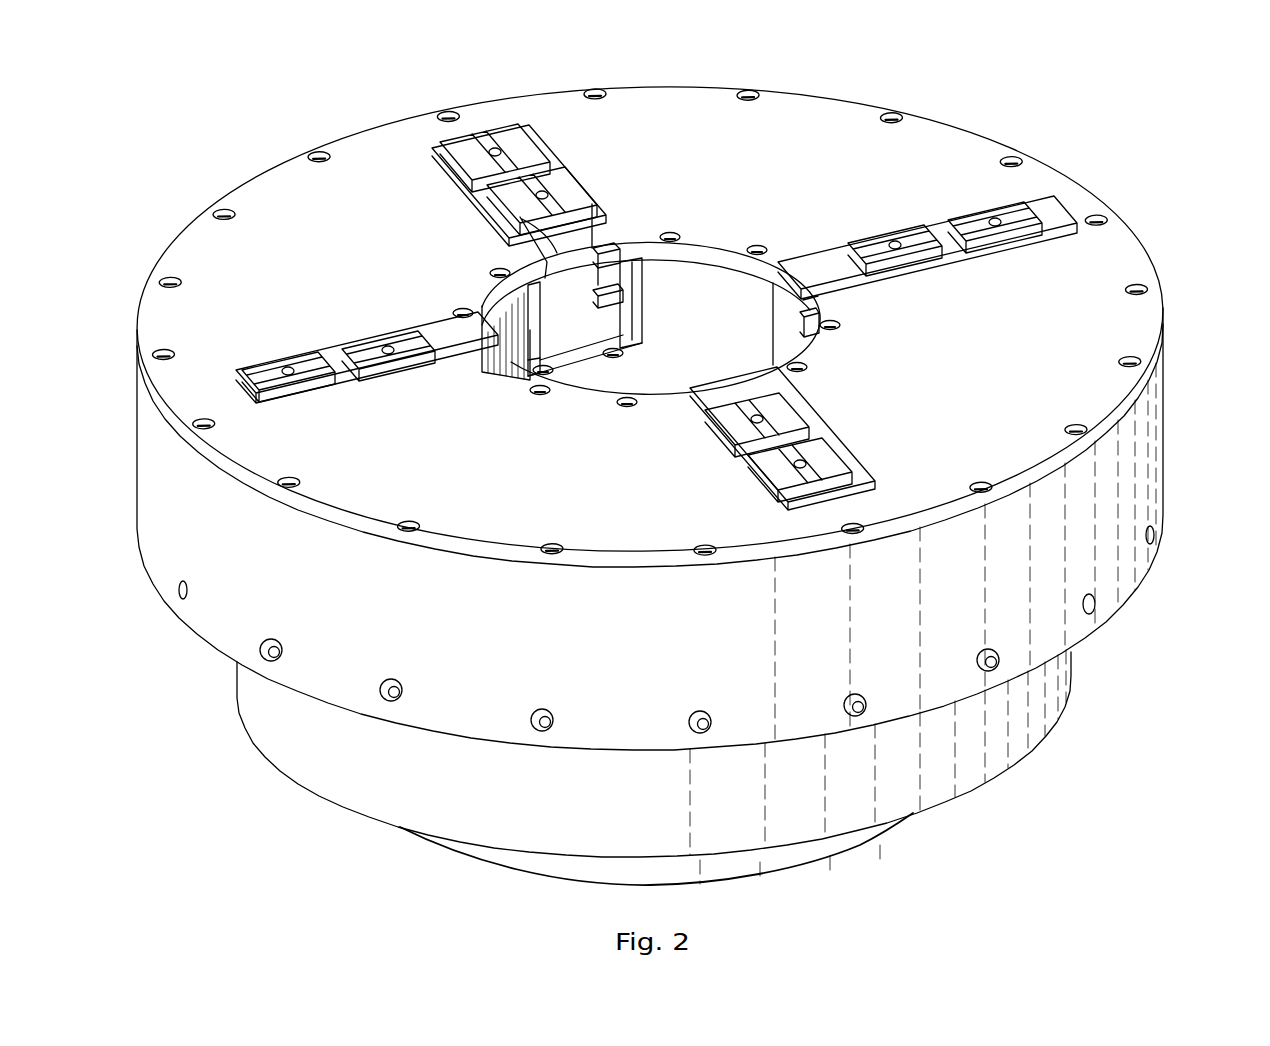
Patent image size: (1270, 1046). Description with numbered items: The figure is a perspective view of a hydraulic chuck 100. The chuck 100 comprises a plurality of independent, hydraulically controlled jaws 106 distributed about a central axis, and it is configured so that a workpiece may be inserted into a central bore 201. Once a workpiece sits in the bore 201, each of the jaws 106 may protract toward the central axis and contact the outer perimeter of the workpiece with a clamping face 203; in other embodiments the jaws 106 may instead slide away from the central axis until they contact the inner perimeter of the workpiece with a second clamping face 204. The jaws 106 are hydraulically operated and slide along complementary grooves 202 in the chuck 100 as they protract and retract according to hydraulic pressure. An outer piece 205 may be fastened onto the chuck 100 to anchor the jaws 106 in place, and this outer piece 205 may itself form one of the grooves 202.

The chuck 100 is at (222, 133).
The jaws 106 is at (560, 184).
The central bore 201 is at (720, 318).
The complementary grooves 202 is at (596, 285).
The clamping face 203 is at (515, 217).
The second clamping face 204 is at (242, 385).
The outer piece 205 is at (1090, 323).